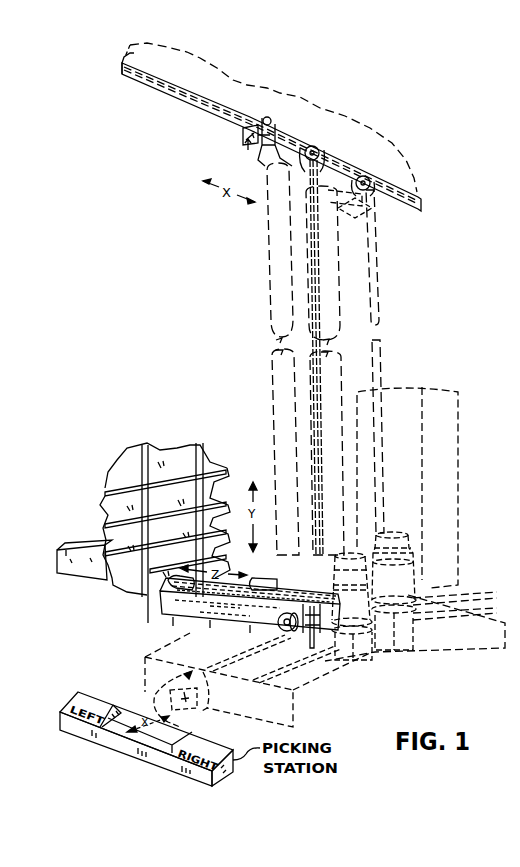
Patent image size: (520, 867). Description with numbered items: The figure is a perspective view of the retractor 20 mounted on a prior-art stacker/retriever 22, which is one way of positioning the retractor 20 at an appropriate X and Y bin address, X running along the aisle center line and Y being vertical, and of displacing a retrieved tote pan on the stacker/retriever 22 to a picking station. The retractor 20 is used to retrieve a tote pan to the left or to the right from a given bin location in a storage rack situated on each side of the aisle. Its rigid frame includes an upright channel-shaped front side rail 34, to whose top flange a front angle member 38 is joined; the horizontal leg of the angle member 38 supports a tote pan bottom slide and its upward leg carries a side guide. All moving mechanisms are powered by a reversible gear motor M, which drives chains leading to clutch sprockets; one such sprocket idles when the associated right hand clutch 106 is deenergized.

The stacker/retriever 22 is at (388, 343).
The retractor 20 is at (160, 630).
The front angle member 38 is at (163, 600).
The front channel shaped side rail 34 is at (248, 618).
The right hand clutch 106 is at (299, 606).
The reversible gear motor M is at (255, 582).